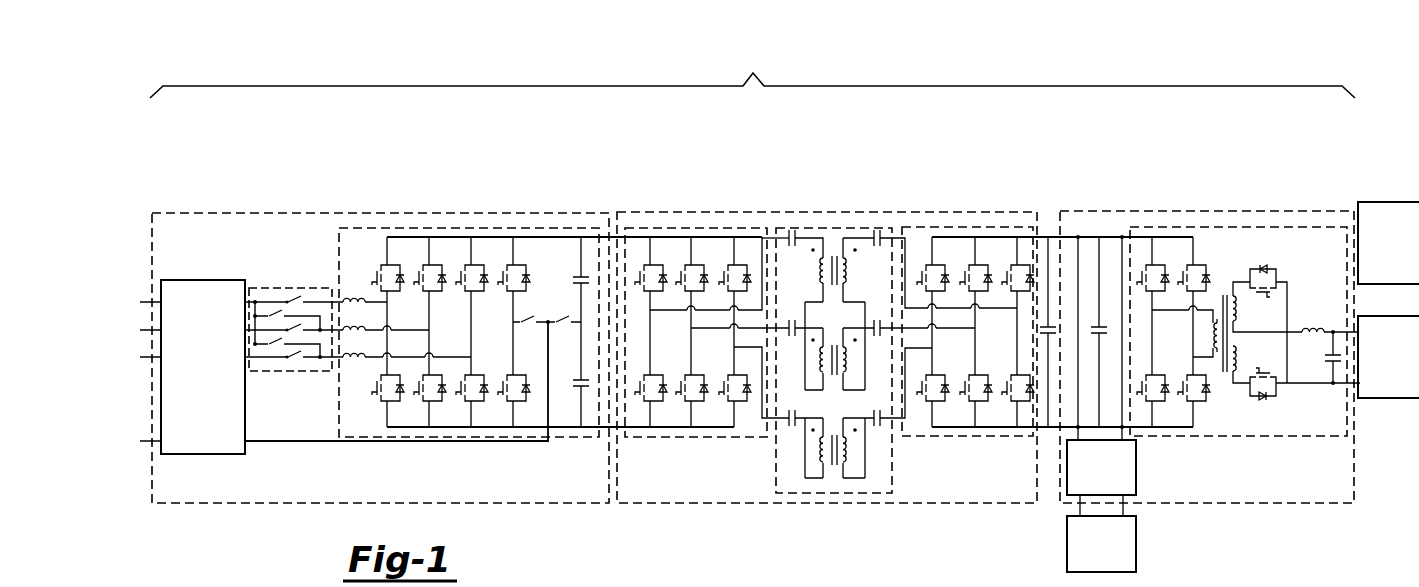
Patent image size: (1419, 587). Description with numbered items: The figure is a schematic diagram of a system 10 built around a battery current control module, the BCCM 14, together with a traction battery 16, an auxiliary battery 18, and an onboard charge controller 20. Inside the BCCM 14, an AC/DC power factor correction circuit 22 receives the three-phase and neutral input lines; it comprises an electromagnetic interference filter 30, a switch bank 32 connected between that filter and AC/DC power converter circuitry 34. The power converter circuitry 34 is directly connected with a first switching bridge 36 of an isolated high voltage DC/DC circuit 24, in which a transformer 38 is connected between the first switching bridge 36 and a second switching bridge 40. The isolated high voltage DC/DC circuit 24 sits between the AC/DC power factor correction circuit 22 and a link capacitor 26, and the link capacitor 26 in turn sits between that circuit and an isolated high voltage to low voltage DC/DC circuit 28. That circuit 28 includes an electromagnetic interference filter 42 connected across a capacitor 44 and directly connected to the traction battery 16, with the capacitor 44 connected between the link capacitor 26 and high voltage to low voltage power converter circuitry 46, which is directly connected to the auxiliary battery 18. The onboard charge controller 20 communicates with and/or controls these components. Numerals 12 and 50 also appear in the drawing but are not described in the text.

The system 10 is at (207, 74).
The vehicle 12 is at (1288, 586).
The BCCM 14 is at (752, 73).
The traction battery 16 is at (1138, 545).
The auxiliary battery 18 is at (1400, 398).
The onboard charge controller 20 is at (1401, 202).
The AC/DC power factor correction circuit 22 is at (380, 212).
The isolated high voltage DC/DC circuit 24 is at (826, 212).
The link capacitor 26 is at (1043, 337).
The isolated high voltage to low voltage DC/DC circuit 28 is at (1206, 211).
The electromagnetic interference filter 30 is at (205, 280).
The switch bank 32 is at (291, 288).
The AC/DC power converter circuitry 34 is at (470, 228).
The first switching bridge 36 is at (697, 437).
The transformer 38 is at (835, 495).
The second switching bridge 40 is at (966, 440).
The electromagnetic interference filter 42 is at (1138, 468).
The capacitor 44 is at (1103, 338).
The high voltage to low voltage power converter circuitry 46 is at (1240, 227).
The controller 50 is at (790, 586).